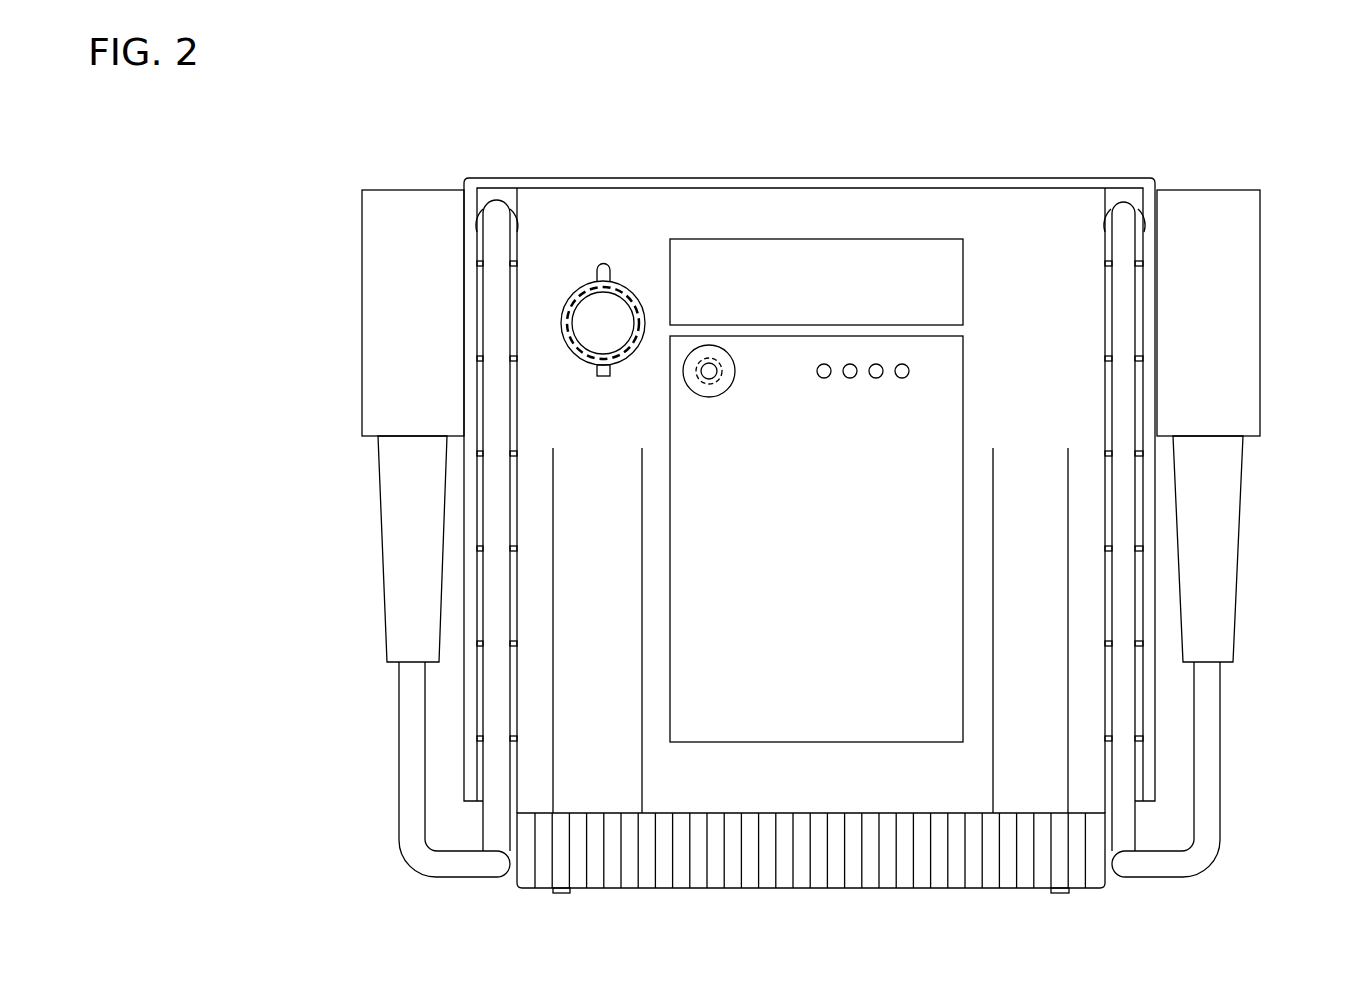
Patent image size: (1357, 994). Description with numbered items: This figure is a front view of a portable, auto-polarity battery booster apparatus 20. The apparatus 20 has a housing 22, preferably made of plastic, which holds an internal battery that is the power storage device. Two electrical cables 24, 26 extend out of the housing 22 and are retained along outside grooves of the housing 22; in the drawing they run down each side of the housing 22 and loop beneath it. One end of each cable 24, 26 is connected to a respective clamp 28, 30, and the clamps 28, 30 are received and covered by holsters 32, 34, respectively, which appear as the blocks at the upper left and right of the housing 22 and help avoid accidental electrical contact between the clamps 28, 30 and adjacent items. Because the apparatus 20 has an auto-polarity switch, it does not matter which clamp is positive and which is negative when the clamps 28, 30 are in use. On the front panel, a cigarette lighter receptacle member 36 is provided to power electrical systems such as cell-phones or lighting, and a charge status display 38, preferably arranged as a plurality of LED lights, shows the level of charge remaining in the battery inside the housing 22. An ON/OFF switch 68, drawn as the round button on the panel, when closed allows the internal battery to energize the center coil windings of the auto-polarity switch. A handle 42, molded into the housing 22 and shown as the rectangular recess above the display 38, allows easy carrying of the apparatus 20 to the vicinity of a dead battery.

The battery booster apparatus 20 is at (1080, 120).
The housing 22 is at (923, 177).
The electrical cable 24 is at (1207, 734).
The electrical cable 26 is at (408, 745).
The clamp 28 is at (1223, 513).
The clamp 30 is at (395, 513).
The holster 32 is at (1234, 250).
The holster 34 is at (410, 203).
The cigarette lighter receptacle member 36 is at (625, 285).
The charge status display 38 is at (816, 539).
The handle 42 is at (945, 279).
The ON/OFF switch 68 is at (718, 395).